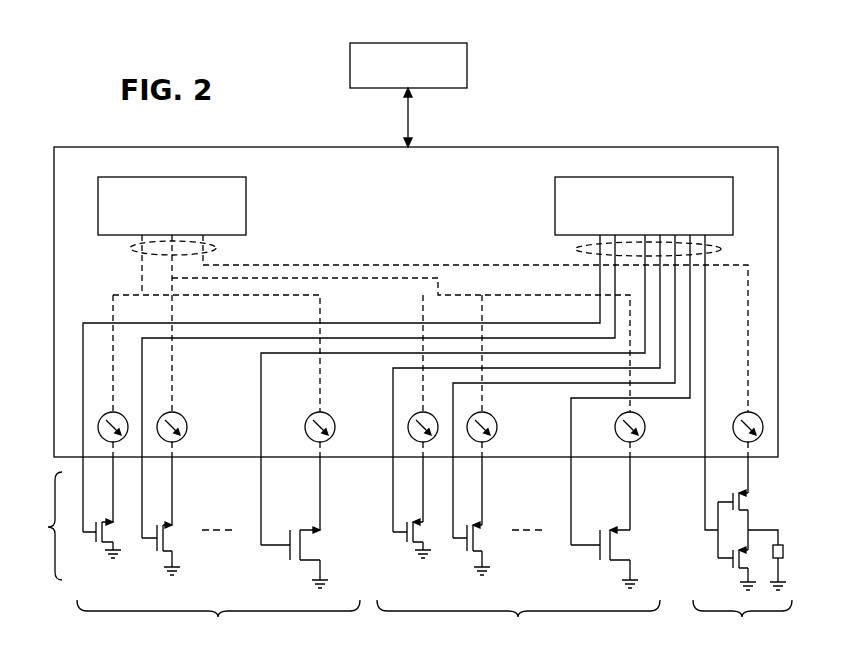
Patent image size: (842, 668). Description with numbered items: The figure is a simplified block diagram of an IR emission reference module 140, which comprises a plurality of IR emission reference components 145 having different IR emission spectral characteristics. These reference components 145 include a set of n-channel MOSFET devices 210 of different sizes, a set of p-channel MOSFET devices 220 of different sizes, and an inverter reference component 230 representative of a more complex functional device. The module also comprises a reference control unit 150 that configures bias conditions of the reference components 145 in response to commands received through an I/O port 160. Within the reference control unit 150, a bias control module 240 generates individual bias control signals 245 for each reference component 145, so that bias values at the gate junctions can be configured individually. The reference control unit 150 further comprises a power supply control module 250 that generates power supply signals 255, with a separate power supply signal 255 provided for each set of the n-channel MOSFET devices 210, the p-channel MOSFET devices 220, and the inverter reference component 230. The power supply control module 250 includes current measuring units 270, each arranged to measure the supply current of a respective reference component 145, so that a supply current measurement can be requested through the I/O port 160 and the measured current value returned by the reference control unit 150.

The IR emission reference module 140 is at (632, 101).
The IR emission reference components 145 is at (39, 526).
The reference control unit 150 is at (738, 147).
The I/O port 160 is at (452, 43).
The n-channel MOSFET devices 210 is at (218, 550).
The p-channel MOSFET devices 220 is at (518, 550).
The inverter reference component 230 is at (742, 549).
The bias control module 240 is at (555, 215).
The bias control signals 245 is at (578, 250).
The power supply control module 250 is at (246, 213).
The power supply signals 255 is at (132, 248).
The current measuring units 270 is at (120, 414).